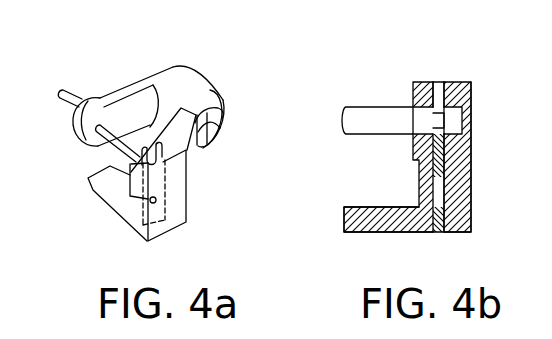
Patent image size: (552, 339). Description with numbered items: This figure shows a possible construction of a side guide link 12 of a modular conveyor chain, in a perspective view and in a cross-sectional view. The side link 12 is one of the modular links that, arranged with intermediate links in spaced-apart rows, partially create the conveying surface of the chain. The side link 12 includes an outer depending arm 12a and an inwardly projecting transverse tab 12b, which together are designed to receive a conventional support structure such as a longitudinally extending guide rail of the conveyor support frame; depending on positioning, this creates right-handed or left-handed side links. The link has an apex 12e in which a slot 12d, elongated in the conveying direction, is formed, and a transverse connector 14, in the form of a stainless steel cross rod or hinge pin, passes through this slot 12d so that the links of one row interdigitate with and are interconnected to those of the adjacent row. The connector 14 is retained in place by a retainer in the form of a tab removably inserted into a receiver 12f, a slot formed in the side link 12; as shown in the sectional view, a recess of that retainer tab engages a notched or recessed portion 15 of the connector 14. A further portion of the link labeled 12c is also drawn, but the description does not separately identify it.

In FIG. 4B, the side guide link 12 is at (458, 82).
In FIG. 4A, the outer depending arm 12a is at (175, 222).
In FIG. 4B, the outer depending arm 12a is at (468, 212).
In FIG. 4A, the transverse tab 12b is at (96, 186).
In FIG. 4B, the transverse tab 12b is at (354, 217).
In FIG. 4A, the rounded boss of bracket 12c is at (90, 107).
In FIG. 4A, the slot 12d is at (232, 104).
In FIG. 4A, the apex 12e is at (228, 136).
In FIG. 4B, the receiver 12f is at (439, 95).
In FIG. 4A, the transverse connector 14 is at (60, 104).
In FIG. 4B, the transverse connector 14 is at (368, 135).
In FIG. 4B, the notched or recessed portion 15 is at (456, 93).